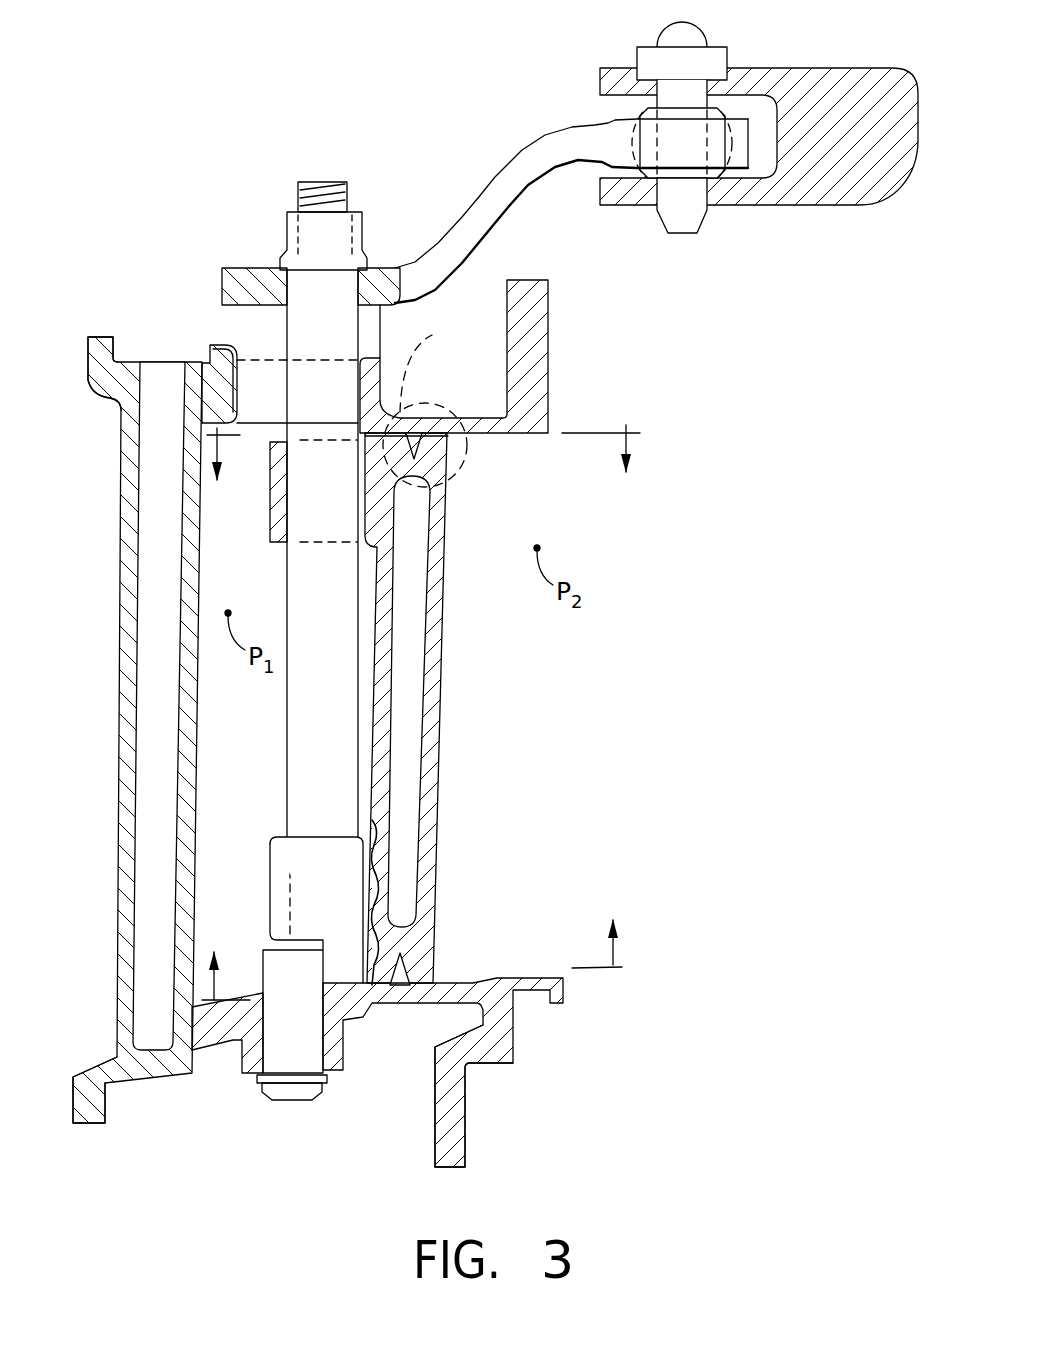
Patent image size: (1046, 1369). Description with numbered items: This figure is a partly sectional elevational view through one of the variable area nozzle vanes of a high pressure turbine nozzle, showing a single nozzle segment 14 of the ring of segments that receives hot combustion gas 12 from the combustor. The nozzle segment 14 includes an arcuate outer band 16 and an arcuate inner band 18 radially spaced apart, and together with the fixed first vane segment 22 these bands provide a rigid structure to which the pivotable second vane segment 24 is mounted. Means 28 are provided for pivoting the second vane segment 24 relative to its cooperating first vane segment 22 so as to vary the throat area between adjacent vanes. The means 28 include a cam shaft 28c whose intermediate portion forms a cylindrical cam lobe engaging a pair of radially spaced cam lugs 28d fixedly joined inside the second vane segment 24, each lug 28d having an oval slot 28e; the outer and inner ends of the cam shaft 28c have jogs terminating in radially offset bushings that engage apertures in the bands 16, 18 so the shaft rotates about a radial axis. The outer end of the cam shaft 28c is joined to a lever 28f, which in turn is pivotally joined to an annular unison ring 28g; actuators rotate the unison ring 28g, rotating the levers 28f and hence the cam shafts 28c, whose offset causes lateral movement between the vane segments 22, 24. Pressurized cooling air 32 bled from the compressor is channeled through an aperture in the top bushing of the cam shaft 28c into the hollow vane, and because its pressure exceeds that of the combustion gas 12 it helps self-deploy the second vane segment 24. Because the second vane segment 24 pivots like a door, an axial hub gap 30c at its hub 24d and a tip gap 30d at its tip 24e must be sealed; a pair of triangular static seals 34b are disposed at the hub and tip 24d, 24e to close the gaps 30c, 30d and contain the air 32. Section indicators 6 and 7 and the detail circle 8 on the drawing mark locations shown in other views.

The combustion gas 12 is at (472, 826).
The nozzle segment 14 is at (88, 280).
The outer band 16 is at (88, 360).
The inner band 18 is at (73, 1087).
The first vane segment 22 is at (118, 862).
The second vane segment 24 is at (446, 718).
The hub 24d is at (438, 978).
The tip 24e is at (450, 440).
The means for pivoting 28 is at (501, 110).
The cam shaft 28c is at (308, 705).
The cam lug 28d is at (270, 505).
The oval slot 28e is at (293, 520).
The lever 28f is at (495, 195).
The unison ring 28g is at (850, 70).
The hub gap 30c is at (437, 983).
The tip gap 30d is at (453, 433).
The pressurized air 32 is at (250, 440).
The triangular static seal 34b is at (439, 481).
The section line 6 is at (422, 475).
The section line 7 is at (415, 938).
The detail circle 8 is at (425, 400).